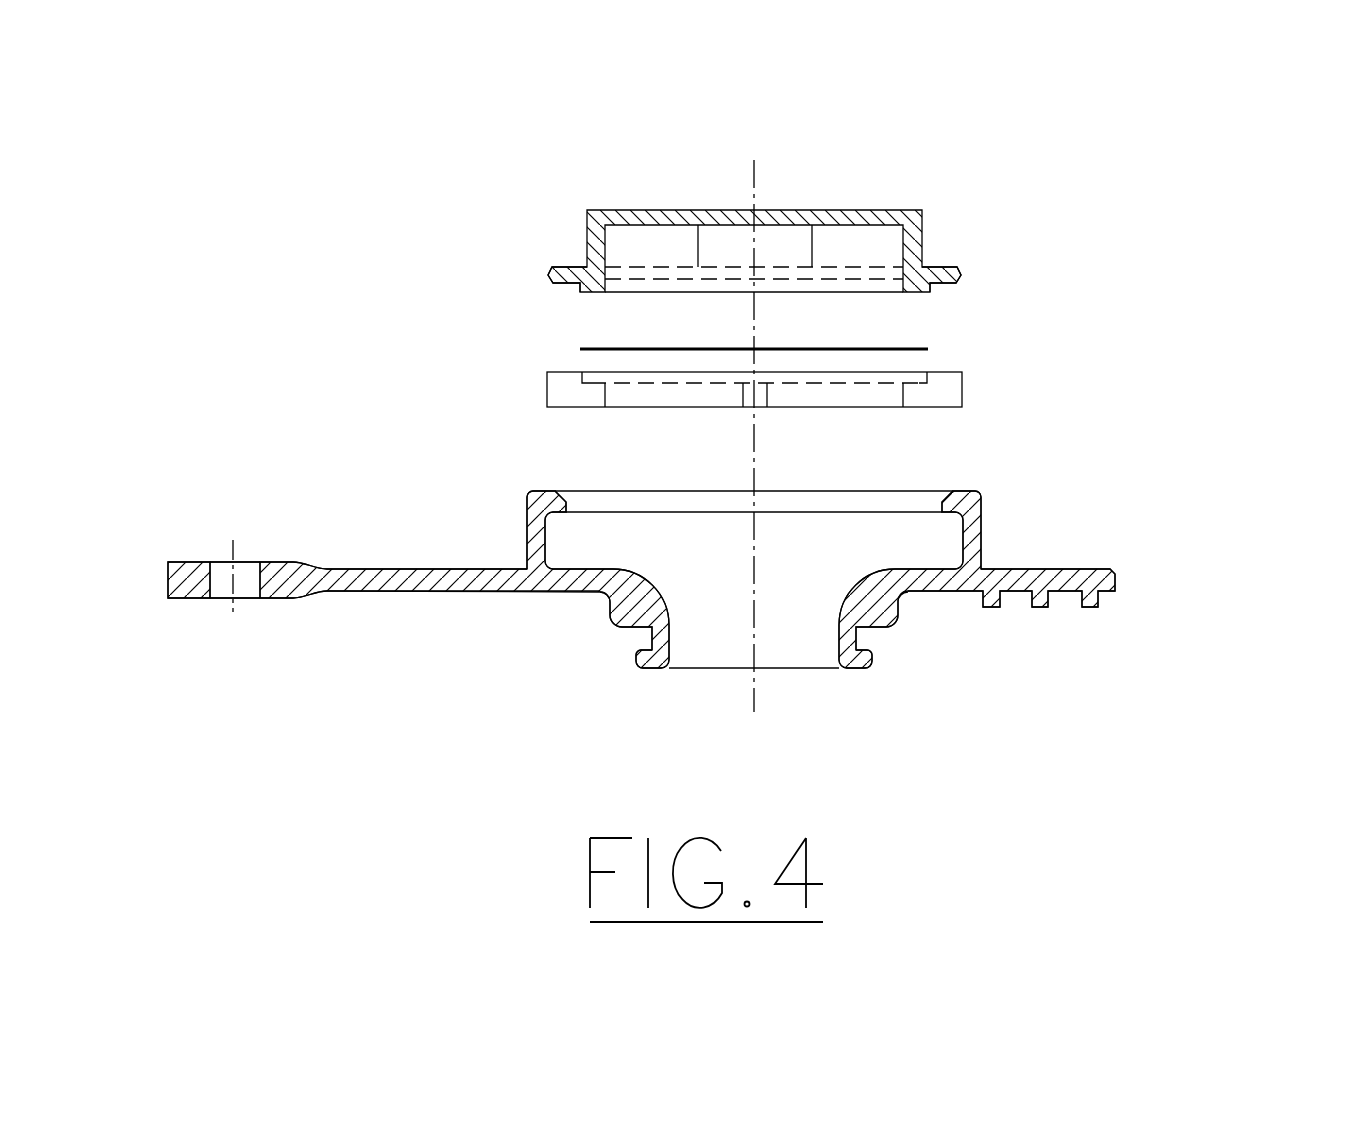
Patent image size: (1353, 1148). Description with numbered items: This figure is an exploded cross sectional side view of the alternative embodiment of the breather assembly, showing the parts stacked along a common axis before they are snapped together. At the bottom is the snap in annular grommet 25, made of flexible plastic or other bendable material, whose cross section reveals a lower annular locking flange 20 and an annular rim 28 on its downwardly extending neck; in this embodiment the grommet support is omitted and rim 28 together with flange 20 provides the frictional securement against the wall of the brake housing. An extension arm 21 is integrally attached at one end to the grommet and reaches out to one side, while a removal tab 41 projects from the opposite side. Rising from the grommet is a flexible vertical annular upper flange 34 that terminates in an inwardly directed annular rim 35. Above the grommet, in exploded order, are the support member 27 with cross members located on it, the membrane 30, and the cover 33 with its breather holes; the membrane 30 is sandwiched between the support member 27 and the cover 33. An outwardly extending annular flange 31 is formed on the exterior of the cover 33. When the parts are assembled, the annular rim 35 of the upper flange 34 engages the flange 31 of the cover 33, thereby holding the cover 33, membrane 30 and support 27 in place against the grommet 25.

The lower annular locking flange 20 is at (860, 665).
The extension arm 21 is at (387, 580).
The snap in annular grommet 25 is at (992, 618).
The support member 27 is at (963, 408).
The annular rim 28 is at (896, 612).
The membrane 30 is at (950, 349).
The outwardly extending annular flange 31 is at (950, 267).
The cover 33 is at (927, 247).
The flexible vertical annular upper flange 34 is at (970, 537).
The annular rim 35 is at (558, 493).
The removal tab 41 is at (1116, 571).